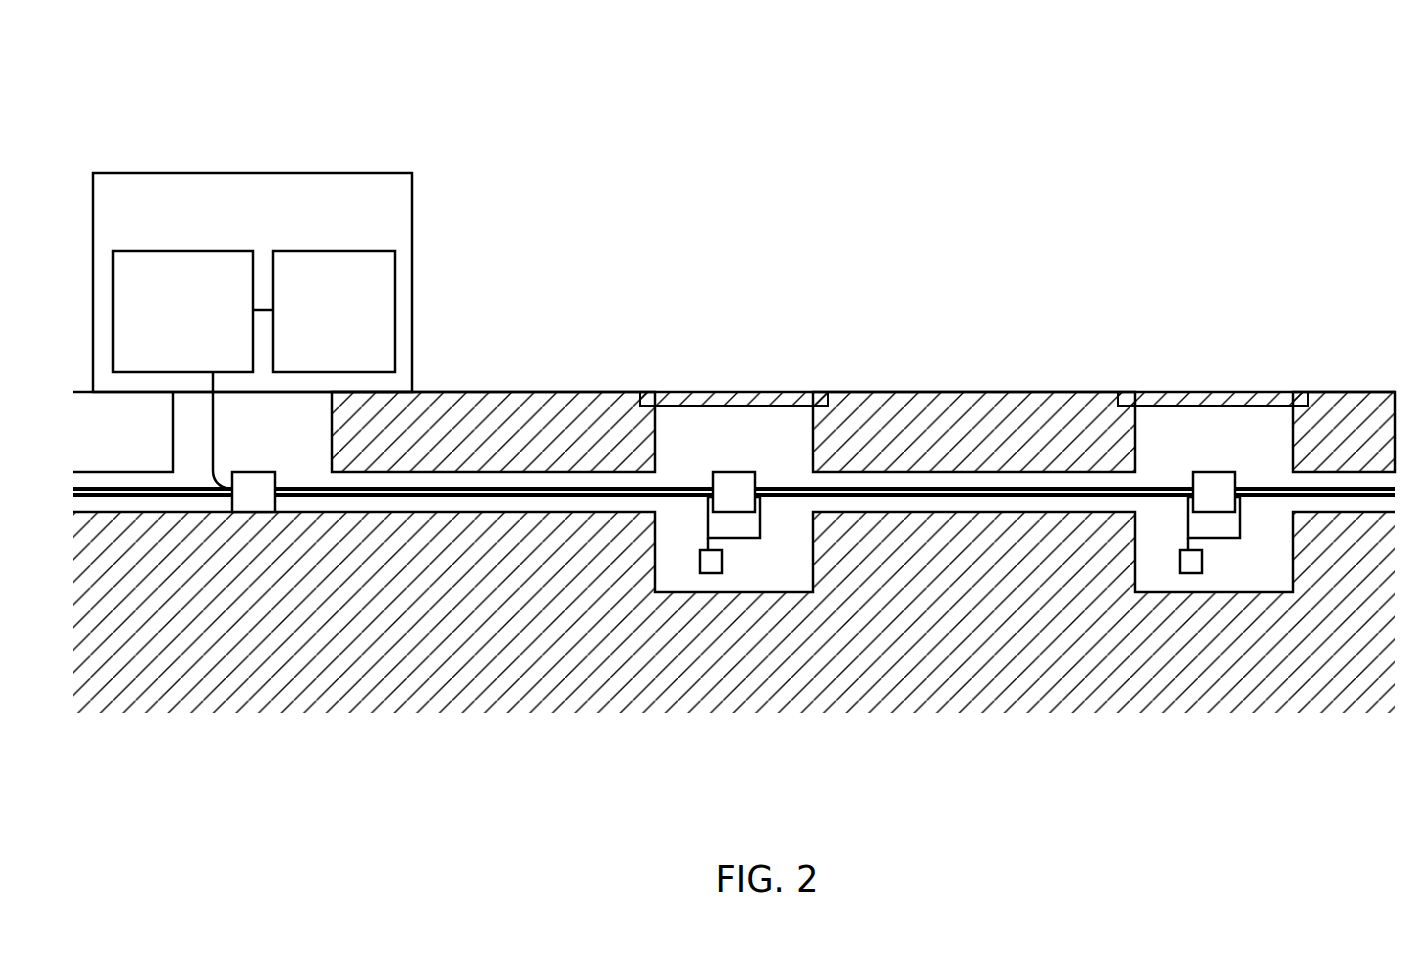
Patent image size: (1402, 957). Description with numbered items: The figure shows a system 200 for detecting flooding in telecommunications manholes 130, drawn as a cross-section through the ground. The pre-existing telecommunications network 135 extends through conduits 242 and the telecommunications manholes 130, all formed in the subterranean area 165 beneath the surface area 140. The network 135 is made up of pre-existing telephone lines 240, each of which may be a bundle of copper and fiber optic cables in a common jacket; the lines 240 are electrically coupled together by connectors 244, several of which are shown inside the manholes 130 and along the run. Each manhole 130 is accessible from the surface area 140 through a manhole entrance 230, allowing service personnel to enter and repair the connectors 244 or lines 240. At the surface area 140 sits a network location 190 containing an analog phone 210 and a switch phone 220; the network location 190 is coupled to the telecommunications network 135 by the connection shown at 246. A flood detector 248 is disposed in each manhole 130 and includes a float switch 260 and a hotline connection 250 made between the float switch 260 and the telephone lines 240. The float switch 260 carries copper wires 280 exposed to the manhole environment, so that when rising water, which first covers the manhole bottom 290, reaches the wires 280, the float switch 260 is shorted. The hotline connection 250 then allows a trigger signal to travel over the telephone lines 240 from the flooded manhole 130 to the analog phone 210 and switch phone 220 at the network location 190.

The system 200 is at (760, 100).
The network location 190 is at (230, 236).
The analog phone 210 is at (160, 356).
The switch phone 220 is at (310, 356).
The coupling of network location to telecommunications network 246 is at (210, 440).
The conduit 242 is at (435, 480).
The manhole entrance 230 is at (823, 400).
The subterranean area 165 is at (1012, 698).
The pre-existing telecommunications network 135 is at (494, 472).
The pre-existing telephone line 240 is at (570, 482).
The hotline connection 250 is at (757, 538).
The connector 244 is at (255, 497).
The float switch 260 is at (705, 575).
The copper wire 280 is at (733, 556).
The flood detector 248 is at (712, 575).
The manhole bottom 290 is at (656, 594).
The telecommunications manhole 130 is at (784, 423).
The surface area 140 is at (987, 390).